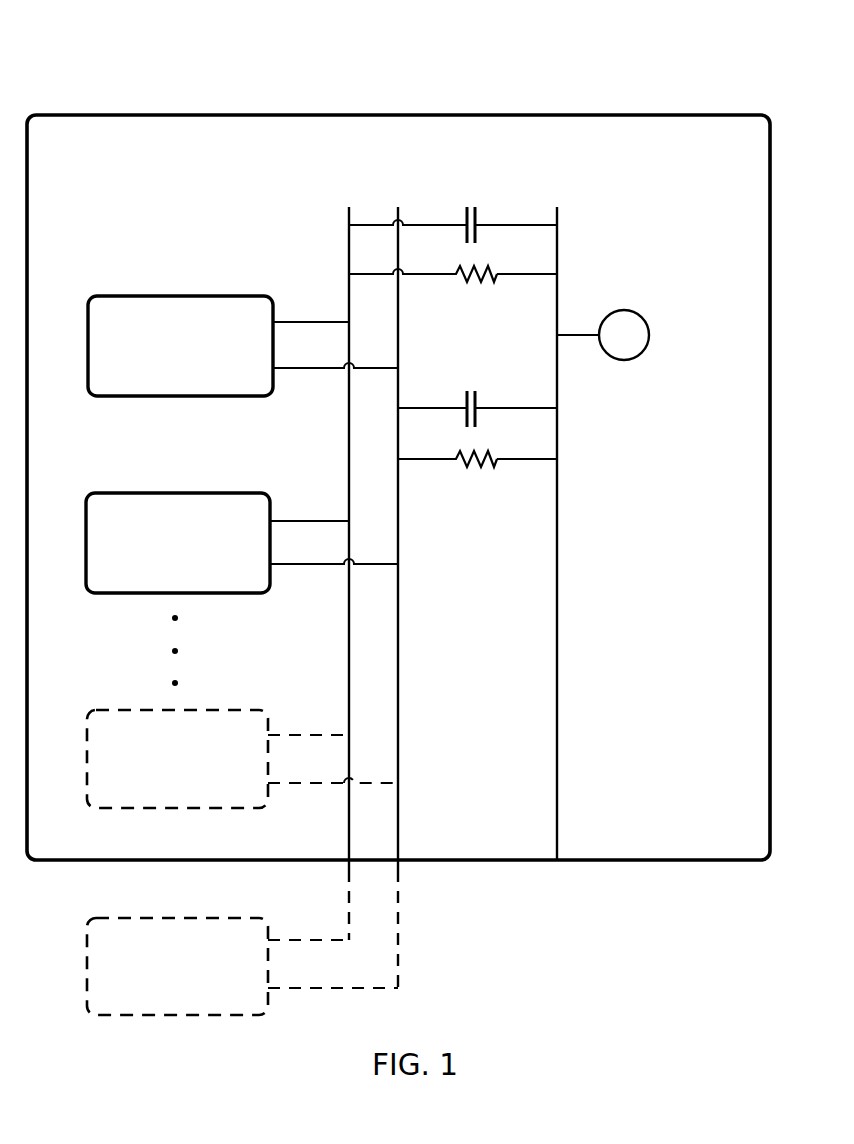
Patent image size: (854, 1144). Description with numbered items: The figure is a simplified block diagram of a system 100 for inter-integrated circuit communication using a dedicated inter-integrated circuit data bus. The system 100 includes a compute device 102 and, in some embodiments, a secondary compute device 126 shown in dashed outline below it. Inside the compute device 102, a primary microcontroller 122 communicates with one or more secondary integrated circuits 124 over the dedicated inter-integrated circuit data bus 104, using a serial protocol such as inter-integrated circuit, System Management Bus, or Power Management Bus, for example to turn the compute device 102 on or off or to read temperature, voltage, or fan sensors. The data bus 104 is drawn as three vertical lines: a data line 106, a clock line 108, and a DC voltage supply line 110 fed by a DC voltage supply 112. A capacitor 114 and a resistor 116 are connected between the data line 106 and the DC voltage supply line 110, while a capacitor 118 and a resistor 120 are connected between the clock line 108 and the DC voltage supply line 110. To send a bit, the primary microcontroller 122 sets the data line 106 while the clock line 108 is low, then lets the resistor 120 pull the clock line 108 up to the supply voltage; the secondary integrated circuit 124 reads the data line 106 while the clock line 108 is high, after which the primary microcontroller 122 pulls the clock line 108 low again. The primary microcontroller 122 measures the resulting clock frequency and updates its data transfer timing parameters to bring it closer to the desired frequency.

The system 100 is at (54, 78).
The compute device 102 is at (172, 114).
The dedicated inter-integrated circuit data bus 104 is at (370, 182).
The data line 106 is at (347, 250).
The clock line 108 is at (400, 250).
The DC voltage supply line 110 is at (559, 250).
The DC voltage supply 112 is at (650, 331).
The capacitor 114 is at (478, 218).
The resistor 116 is at (483, 284).
The capacitor 118 is at (478, 402).
The resistor 120 is at (483, 469).
The primary microcontroller 122 is at (128, 296).
The secondary integrated circuit 124 is at (128, 493).
The secondary compute device 126 is at (128, 918).